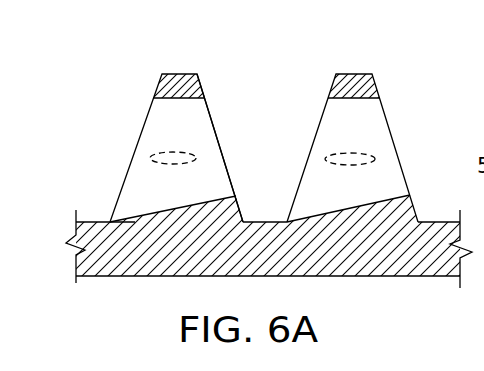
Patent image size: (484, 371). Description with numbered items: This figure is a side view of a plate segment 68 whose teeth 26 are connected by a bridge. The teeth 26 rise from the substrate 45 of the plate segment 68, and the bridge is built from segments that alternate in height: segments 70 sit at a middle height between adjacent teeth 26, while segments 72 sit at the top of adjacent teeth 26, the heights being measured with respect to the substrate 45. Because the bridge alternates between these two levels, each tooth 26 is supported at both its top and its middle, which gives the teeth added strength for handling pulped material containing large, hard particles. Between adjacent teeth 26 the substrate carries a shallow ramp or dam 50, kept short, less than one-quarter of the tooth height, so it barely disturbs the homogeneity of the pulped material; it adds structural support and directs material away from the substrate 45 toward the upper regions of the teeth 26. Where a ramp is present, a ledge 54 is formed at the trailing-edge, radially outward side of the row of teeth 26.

The teeth 26 is at (208, 112).
The substrate 45 is at (433, 219).
The ramp or dam 50 is at (130, 216).
The ledge 54 is at (220, 146).
The plate segment 68 is at (97, 280).
The bridge segment at middle height 70 is at (170, 153).
The bridge segment at top of teeth 72 is at (200, 86).